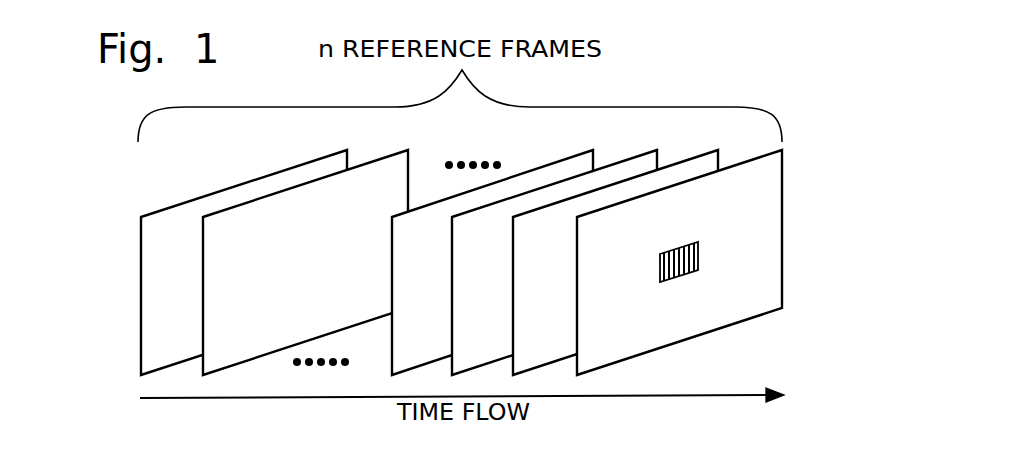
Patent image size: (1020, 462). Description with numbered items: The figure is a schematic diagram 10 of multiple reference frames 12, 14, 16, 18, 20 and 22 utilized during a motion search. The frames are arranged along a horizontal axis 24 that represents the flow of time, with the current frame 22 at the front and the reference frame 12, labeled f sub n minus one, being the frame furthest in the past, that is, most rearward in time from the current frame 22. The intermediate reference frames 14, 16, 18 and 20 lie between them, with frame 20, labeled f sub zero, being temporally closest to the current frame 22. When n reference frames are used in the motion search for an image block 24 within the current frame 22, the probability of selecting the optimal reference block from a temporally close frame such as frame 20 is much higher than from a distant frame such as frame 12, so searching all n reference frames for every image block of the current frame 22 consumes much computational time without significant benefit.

The schematic diagram 10 is at (501, 233).
The reference frame 12 is at (188, 324).
The reference frame 14 is at (251, 324).
The reference frame 16 is at (437, 324).
The reference frame 18 is at (498, 324).
The reference frame 20 is at (561, 324).
The current frame 22 is at (622, 324).
The horizontal axis / image block 24 is at (675, 243).